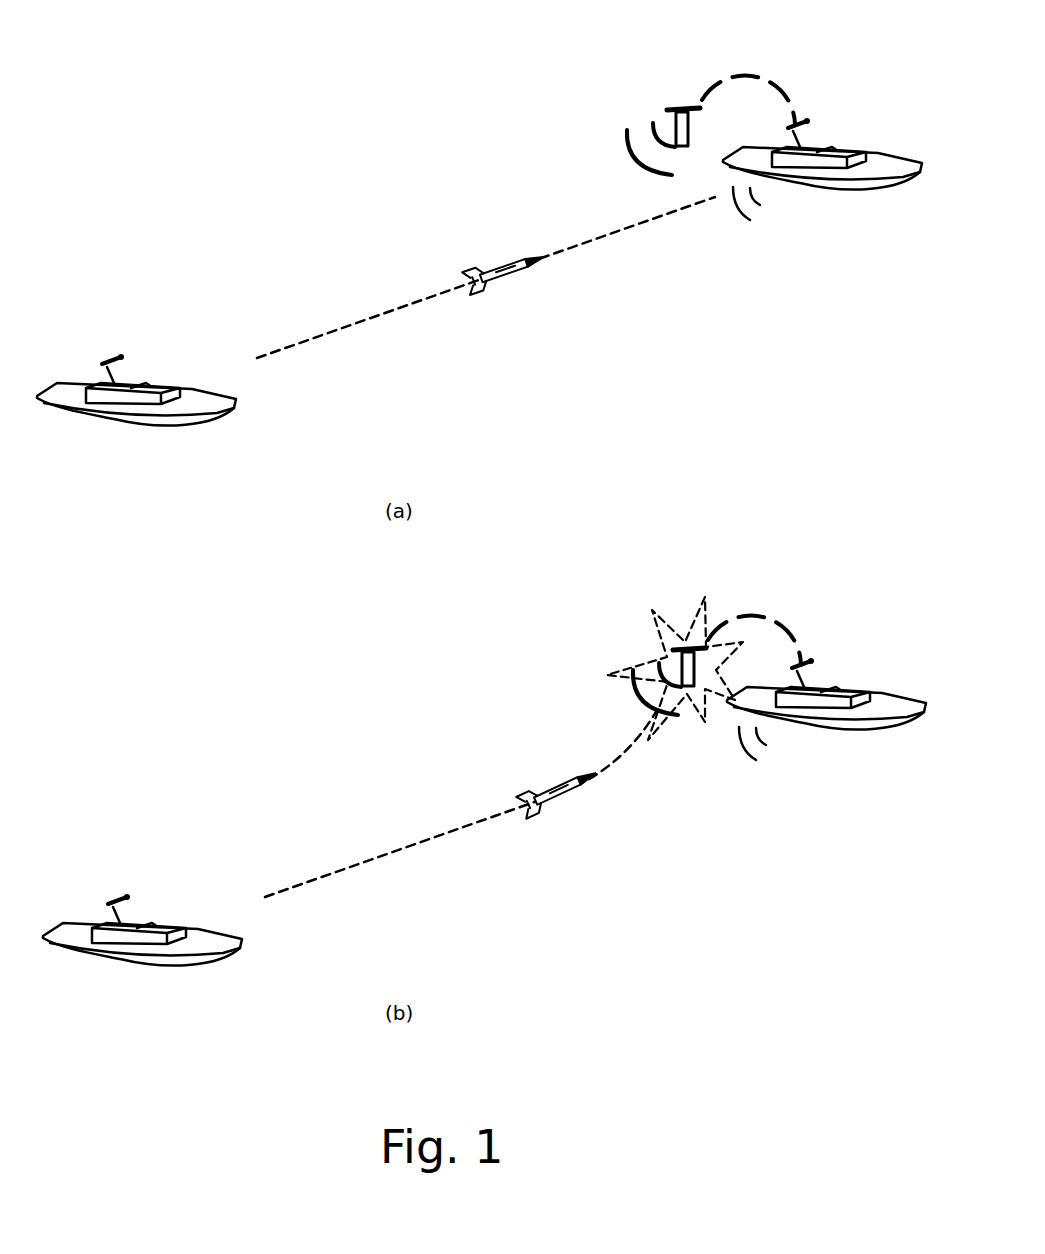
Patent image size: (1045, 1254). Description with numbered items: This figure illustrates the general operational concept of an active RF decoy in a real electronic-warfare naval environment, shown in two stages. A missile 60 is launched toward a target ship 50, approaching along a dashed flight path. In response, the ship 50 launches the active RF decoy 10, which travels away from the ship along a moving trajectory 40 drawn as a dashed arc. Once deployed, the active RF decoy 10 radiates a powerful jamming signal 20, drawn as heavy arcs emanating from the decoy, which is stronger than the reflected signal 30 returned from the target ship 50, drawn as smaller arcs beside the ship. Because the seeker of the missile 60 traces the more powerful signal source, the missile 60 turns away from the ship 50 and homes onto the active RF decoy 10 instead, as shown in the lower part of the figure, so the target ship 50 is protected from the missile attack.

The active RF decoy 10 is at (667, 107).
The radiated jamming signal 20 is at (625, 153).
The reflected signal of target ship 30 is at (738, 225).
The moving trajectory of the active RF decoy 40 is at (755, 73).
The target ship 50 is at (880, 153).
The missile 60 is at (527, 280).